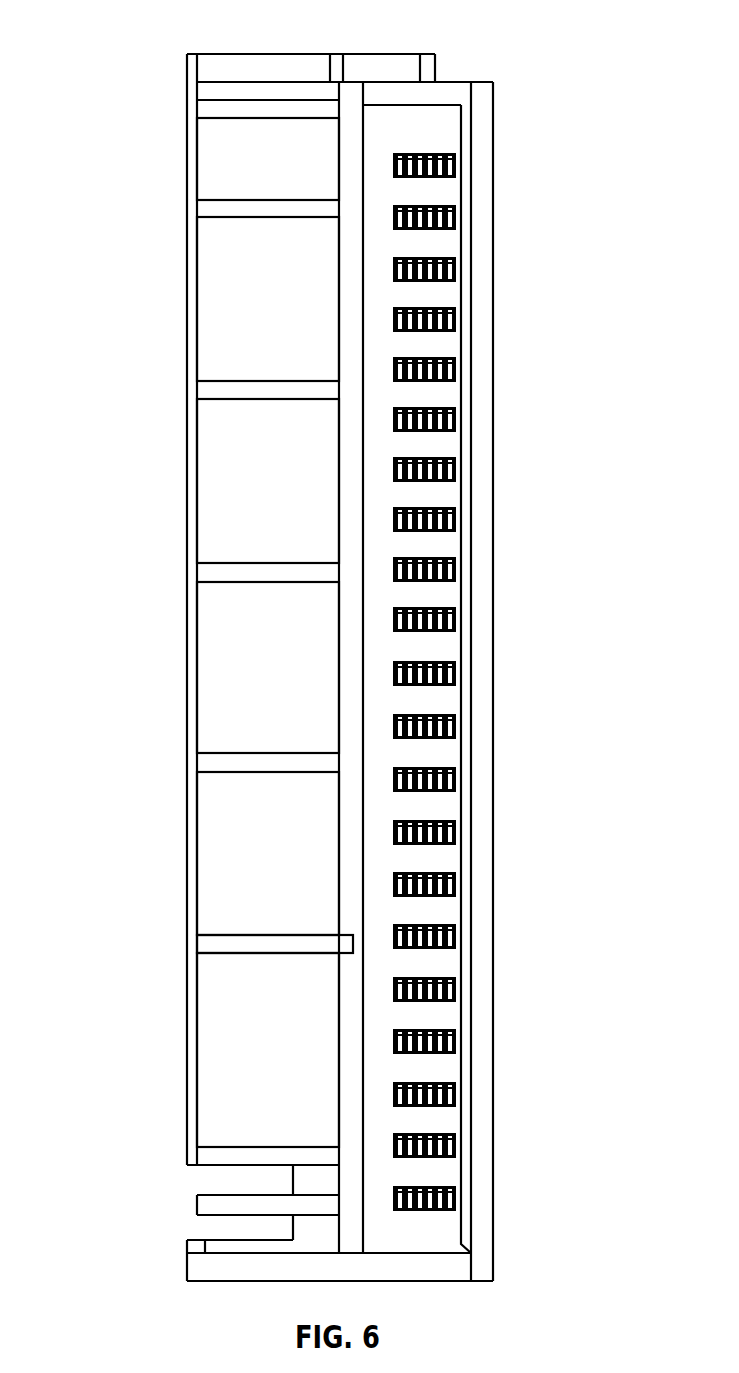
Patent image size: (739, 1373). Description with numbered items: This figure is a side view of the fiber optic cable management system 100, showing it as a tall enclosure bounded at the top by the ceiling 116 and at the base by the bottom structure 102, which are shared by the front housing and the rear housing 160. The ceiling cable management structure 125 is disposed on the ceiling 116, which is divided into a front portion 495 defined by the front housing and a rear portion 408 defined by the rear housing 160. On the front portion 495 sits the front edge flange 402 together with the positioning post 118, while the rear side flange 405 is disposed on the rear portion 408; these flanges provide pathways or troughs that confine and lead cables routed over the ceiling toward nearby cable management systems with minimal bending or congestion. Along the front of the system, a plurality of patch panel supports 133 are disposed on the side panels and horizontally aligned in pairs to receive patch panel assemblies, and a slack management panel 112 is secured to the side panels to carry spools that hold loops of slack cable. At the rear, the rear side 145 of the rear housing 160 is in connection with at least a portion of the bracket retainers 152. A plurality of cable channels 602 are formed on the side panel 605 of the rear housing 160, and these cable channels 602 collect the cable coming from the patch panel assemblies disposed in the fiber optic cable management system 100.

The fiber optic cable management system 100 is at (127, 143).
The front edge flange 402 is at (193, 70).
The positioning post 118 is at (326, 70).
The ceiling cable management structure 125 is at (301, 38).
The rear side flange 405 is at (432, 53).
The rear housing 160 is at (442, 58).
The ceiling 116 is at (480, 80).
The front portion 495 is at (273, 92).
The rear portion 408 is at (427, 87).
The bracket retainers 152 is at (212, 207).
The rear side 145 is at (357, 227).
The slack management panel 112 is at (239, 461).
The cable channels 602 is at (447, 365).
The side panel 605 is at (437, 493).
The patch panel supports 133 is at (212, 1202).
The bottom structure 102 is at (213, 1268).